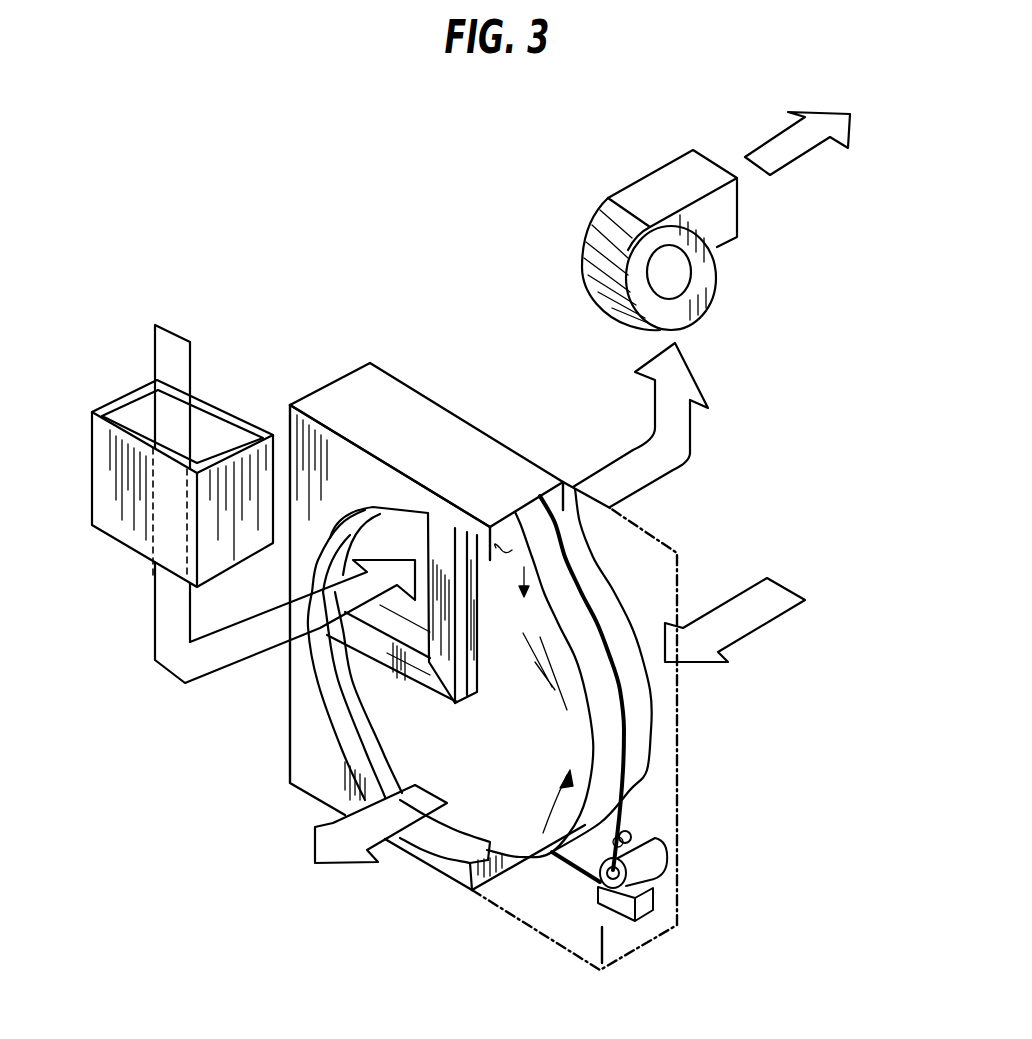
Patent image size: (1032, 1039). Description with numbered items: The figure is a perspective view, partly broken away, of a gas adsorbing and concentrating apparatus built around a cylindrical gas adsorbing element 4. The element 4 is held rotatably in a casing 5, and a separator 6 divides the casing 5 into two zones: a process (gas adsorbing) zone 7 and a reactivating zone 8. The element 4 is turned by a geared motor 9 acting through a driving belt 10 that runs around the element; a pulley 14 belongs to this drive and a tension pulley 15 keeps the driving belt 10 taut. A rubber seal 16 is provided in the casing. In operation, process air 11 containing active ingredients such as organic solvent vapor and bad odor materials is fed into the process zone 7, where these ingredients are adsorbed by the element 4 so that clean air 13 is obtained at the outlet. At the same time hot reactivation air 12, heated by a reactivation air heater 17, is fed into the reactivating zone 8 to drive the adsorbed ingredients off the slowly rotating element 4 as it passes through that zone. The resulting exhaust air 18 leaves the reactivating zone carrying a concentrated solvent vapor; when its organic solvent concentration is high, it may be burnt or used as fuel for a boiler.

The gas adsorbing element 4 is at (528, 566).
The casing 5 is at (402, 412).
The separator 6 is at (387, 653).
The process zone 7 is at (517, 817).
The reactivating zone 8 is at (388, 527).
The geared motor 9 is at (657, 862).
The driving belt 10 is at (630, 742).
The process air 11 is at (770, 600).
The reactivation air 12 is at (168, 642).
The clean air 13 is at (347, 840).
The pulley 14 is at (653, 913).
The tension pulley 15 is at (628, 836).
The rubber seal 16 is at (465, 840).
The reactivation air heater 17 is at (100, 460).
The exhaust air 18 is at (836, 128).